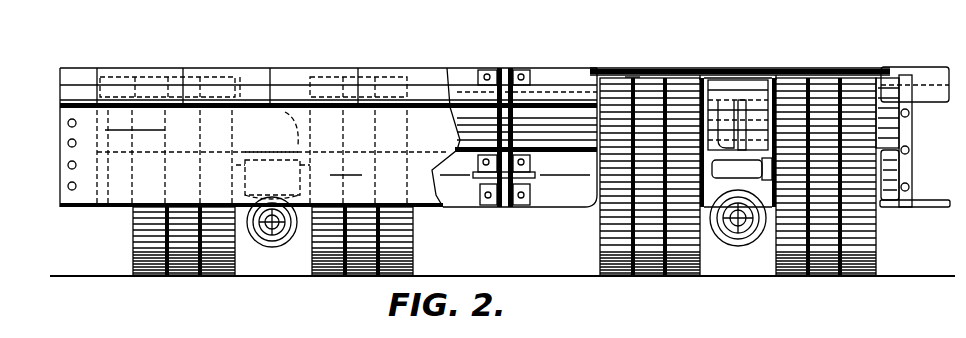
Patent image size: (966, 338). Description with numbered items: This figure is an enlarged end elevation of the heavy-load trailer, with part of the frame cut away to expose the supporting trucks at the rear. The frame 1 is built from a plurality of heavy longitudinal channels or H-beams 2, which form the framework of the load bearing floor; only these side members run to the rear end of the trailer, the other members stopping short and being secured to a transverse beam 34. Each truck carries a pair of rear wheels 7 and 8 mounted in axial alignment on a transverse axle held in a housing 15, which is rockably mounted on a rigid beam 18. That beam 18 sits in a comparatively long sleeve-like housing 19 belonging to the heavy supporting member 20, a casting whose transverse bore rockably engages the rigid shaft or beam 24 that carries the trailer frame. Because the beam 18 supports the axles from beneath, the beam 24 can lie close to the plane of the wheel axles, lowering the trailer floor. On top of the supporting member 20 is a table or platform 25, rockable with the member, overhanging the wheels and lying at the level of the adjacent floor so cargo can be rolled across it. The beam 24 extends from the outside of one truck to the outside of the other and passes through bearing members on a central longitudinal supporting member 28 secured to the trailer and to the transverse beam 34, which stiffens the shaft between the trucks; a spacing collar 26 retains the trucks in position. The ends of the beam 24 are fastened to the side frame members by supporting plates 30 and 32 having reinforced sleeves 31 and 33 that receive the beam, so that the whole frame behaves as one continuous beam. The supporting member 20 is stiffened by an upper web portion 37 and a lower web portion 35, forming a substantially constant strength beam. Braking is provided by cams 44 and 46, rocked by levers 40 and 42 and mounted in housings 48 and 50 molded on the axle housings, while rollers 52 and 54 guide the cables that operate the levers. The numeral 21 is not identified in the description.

The frame 1 is at (72, 100).
The longitudinal channels or H-beams 2 is at (918, 165).
The rear wheel 7 is at (240, 277).
The rear wheel 8 is at (345, 277).
The housing 15 is at (781, 185).
The rigid beam 18 is at (280, 238).
The sleeve-like housing 19 is at (268, 235).
The supporting member 20 is at (782, 68).
The coupling plate 21 is at (475, 160).
The rigid shaft or beam 24 is at (235, 76).
The table or platform 25 is at (322, 66).
The spacing collar 26 is at (560, 157).
The central longitudinal supporting member 28 is at (490, 72).
The supporting plate 30 is at (904, 85).
The reinforced sleeve 31 is at (892, 75).
The supporting plate 32 is at (95, 190).
The reinforced sleeve 33 is at (120, 97).
The transverse beam 34 is at (542, 75).
The lower web portion 35 is at (752, 117).
The upper web portion 37 is at (772, 72).
The lever 40 is at (290, 125).
The lever 42 is at (712, 108).
The cam 44 is at (272, 145).
The cam 46 is at (772, 168).
The housing 48 is at (273, 179).
The housing 50 is at (745, 132).
The roller 52 is at (490, 197).
The roller 54 is at (520, 197).